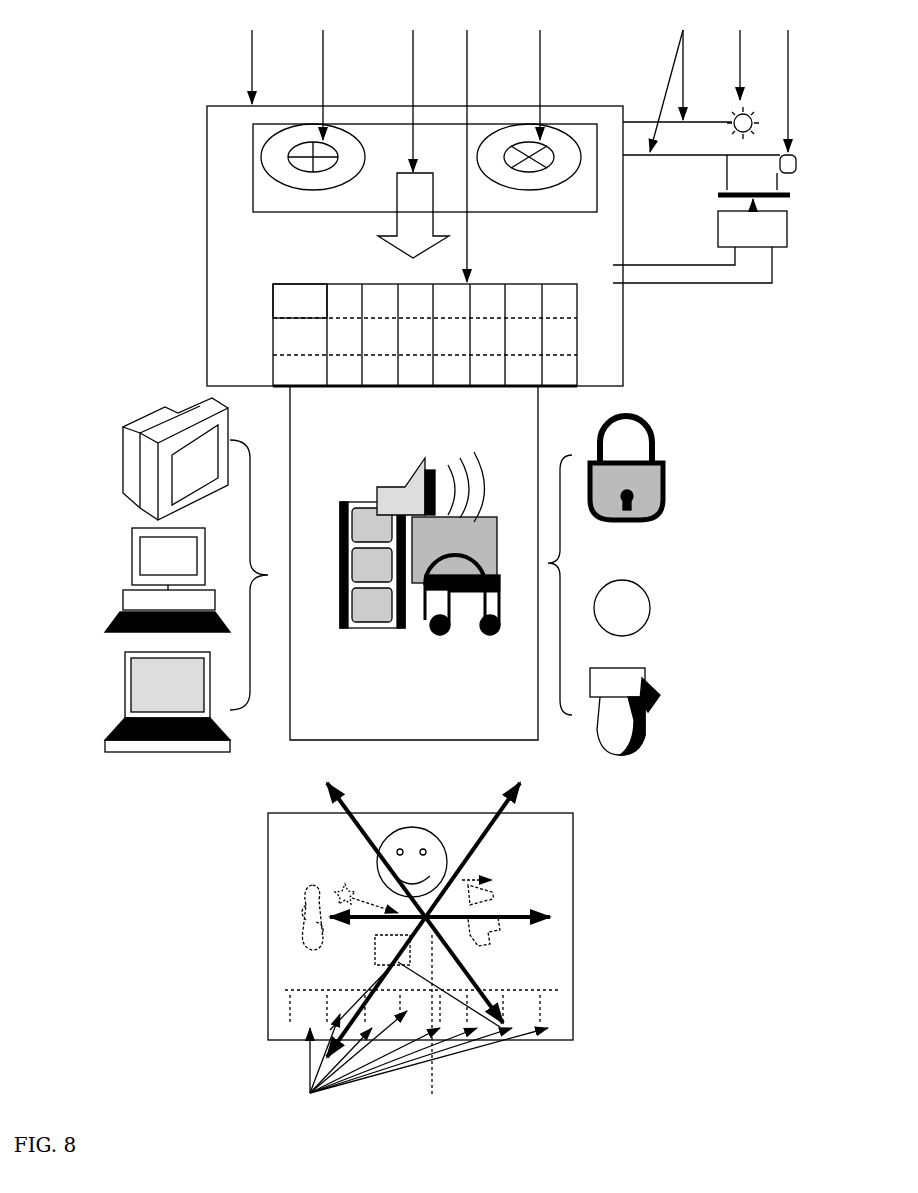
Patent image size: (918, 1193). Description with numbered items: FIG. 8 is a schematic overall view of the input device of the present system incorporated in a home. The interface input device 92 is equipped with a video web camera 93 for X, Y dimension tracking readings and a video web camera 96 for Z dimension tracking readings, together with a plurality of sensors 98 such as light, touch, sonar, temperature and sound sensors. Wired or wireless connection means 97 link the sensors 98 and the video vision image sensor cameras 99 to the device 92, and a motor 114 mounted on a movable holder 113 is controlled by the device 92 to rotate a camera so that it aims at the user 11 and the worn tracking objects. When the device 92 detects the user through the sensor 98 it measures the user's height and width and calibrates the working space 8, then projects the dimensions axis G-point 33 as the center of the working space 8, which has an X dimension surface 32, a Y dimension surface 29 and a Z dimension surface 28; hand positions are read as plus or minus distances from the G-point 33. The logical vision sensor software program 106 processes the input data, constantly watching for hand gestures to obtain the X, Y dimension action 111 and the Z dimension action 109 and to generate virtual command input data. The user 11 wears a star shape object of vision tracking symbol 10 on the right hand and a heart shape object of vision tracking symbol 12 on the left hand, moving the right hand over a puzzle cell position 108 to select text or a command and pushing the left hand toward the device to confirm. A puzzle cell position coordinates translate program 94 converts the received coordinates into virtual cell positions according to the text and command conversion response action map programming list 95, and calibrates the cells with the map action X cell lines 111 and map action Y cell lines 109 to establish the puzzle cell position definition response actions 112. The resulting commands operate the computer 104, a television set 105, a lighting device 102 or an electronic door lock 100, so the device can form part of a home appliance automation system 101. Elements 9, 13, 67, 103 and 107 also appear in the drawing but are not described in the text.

The working space 8 is at (267, 828).
The hand gesture input 9 is at (300, 917).
The star shape object of vision tracking symbol 10 is at (331, 882).
The user 11 is at (434, 828).
The heart shape object of vision tracking symbol 12 is at (492, 882).
The hand pointer 13 is at (512, 953).
The Z dimension surface 28 is at (321, 777).
The Y dimension surface 29 is at (529, 797).
The X dimension surface 32 is at (564, 917).
The dimensions axis G-point 33 is at (437, 1029).
The selection window 67 is at (370, 968).
The interface input device 92 is at (252, 57).
The video web camera 93 is at (323, 75).
The puzzle cell position coordinates translate program 94 is at (413, 134).
The text and command conversion response action map programming list 95 is at (467, 146).
The video web camera 96 is at (540, 75).
The connection means 97 is at (701, 82).
The sensors 98 is at (743, 74).
The video vision image sensor cameras 99 is at (788, 91).
The electronic door lock 100 is at (667, 458).
The home appliance automation system 101 is at (511, 563).
The lighting device 102 is at (652, 703).
The laptop computer 103 is at (122, 668).
The computer 104 is at (122, 547).
The television set 105 is at (122, 440).
The logical vision sensor software program 106 is at (252, 142).
The circular element 107 is at (652, 618).
The puzzle cell position 108 is at (422, 1056).
The Z dimension action 109 is at (544, 302).
The X, Y dimension action 111 is at (564, 355).
The puzzle cell position definition response actions 112 is at (380, 370).
The movable holder 113 is at (795, 195).
The motor 114 is at (790, 230).